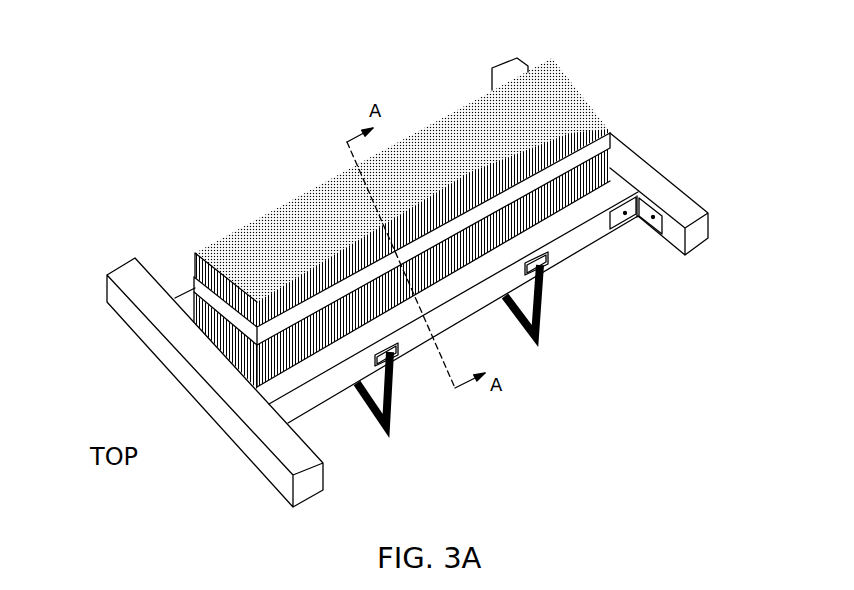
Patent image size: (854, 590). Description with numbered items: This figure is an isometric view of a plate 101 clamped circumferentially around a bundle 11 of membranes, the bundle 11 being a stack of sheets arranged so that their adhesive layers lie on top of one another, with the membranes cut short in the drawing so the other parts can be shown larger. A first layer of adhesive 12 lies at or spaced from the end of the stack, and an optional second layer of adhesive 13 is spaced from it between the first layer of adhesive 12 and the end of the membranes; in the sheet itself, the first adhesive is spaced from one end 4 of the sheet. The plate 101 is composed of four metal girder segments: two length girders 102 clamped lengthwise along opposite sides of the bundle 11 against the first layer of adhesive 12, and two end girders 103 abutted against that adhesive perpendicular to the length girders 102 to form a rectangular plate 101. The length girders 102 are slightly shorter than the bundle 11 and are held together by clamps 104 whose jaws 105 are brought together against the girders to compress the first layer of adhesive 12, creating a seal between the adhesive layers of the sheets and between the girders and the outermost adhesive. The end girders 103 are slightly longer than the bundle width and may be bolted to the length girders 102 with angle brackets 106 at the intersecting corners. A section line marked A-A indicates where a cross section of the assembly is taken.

The end of the sheet 4 is at (288, 208).
The bundle 11 is at (365, 192).
The first layer of adhesive 12 is at (257, 387).
The second layer of adhesive 13 is at (610, 127).
The plate 101 is at (653, 178).
The length girder 102 is at (460, 313).
The end girder 103 is at (117, 303).
The clamp 104 is at (382, 430).
The jaw 105 is at (393, 355).
The angle bracket 106 is at (662, 236).